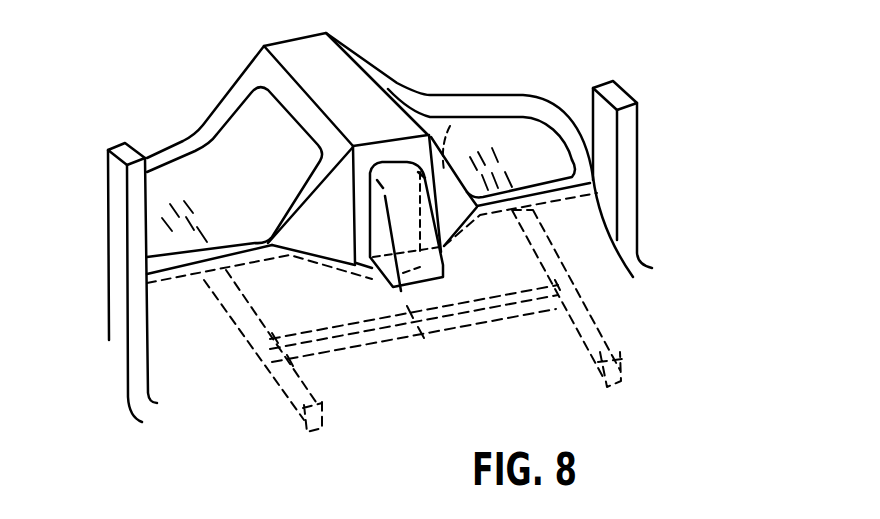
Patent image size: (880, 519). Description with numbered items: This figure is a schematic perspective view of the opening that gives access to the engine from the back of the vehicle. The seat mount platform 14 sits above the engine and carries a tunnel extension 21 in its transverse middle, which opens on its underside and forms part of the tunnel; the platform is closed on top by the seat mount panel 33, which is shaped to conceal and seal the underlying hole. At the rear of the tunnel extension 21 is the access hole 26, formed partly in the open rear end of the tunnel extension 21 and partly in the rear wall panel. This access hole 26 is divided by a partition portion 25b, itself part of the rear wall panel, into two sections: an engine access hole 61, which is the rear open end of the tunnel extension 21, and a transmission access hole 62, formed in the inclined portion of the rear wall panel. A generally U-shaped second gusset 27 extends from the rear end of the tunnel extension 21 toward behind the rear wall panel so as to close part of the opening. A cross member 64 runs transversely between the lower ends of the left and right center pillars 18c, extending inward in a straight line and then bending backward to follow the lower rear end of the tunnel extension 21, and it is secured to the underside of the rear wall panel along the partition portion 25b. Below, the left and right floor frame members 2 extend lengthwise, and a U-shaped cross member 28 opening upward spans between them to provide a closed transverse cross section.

The floor frame member 2 is at (274, 384).
The seat mount platform 14 is at (170, 129).
The center pillar 18c is at (119, 273).
The tunnel extension 21 is at (338, 84).
The partition portion 25b is at (410, 333).
The access hole 26 is at (361, 285).
The second gusset 27 is at (397, 203).
The cross member 28 is at (466, 323).
The seat mount panel 33 is at (222, 145).
The engine access hole 61 is at (460, 143).
The transmission access hole 62 is at (446, 262).
The cross member 64 is at (295, 262).